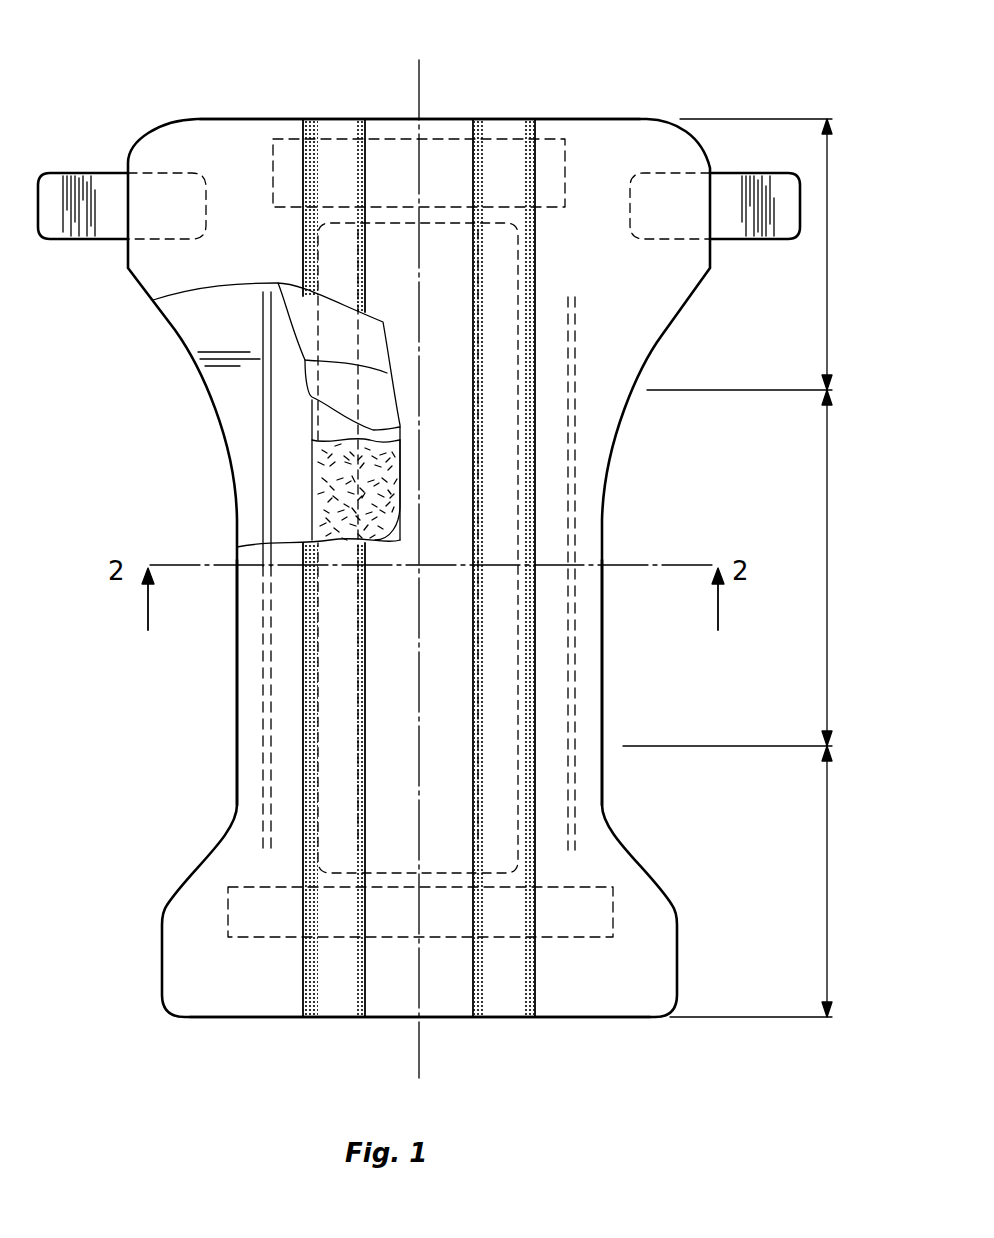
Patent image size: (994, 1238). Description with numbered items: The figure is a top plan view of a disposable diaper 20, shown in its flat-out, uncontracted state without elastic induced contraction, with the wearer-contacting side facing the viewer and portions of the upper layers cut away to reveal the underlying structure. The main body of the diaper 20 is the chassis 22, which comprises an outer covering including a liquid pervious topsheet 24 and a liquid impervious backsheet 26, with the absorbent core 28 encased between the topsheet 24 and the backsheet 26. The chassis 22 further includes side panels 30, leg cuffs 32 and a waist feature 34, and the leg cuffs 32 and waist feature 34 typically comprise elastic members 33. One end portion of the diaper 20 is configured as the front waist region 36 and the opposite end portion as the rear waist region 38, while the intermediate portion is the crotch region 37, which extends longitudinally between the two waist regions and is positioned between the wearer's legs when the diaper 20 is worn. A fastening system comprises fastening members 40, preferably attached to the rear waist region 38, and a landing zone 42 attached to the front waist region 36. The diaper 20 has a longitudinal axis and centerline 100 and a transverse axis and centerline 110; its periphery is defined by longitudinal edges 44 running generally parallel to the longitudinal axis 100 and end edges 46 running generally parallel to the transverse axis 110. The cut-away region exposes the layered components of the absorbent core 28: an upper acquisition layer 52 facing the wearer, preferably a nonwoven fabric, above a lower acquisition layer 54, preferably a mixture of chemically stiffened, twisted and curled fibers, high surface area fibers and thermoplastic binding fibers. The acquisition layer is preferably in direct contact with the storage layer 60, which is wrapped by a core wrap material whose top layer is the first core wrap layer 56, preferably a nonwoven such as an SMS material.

The diaper 20 is at (704, 90).
The chassis 22 is at (455, 693).
The topsheet 24 is at (386, 703).
The backsheet 26 is at (195, 328).
The absorbent core 28 is at (316, 460).
The side panels 30 is at (215, 176).
The leg cuffs 32 is at (303, 655).
The elastic members 33 is at (358, 258).
The waist feature 34 is at (452, 160).
The front waist region 36 is at (768, 881).
The crotch region 37 is at (745, 568).
The rear waist region 38 is at (757, 254).
The fastening members 40 is at (103, 185).
The landing zone 42 is at (290, 912).
The longitudinal edges 44 is at (237, 777).
The end edges 46 is at (322, 119).
The upper acquisition layer 52 is at (364, 341).
The lower acquisition layer 54 is at (382, 400).
The first core wrap layer 56 is at (331, 423).
The storage layer 60 is at (375, 508).
The longitudinal centerline 100 is at (422, 1070).
The transverse centerline 110 is at (655, 563).